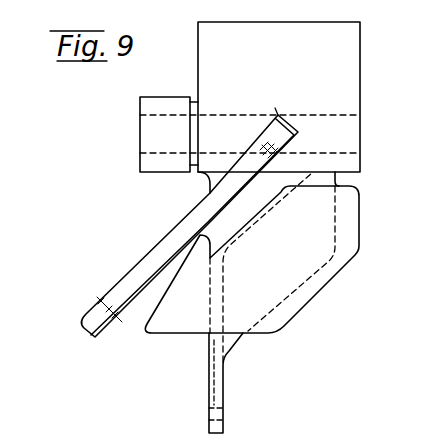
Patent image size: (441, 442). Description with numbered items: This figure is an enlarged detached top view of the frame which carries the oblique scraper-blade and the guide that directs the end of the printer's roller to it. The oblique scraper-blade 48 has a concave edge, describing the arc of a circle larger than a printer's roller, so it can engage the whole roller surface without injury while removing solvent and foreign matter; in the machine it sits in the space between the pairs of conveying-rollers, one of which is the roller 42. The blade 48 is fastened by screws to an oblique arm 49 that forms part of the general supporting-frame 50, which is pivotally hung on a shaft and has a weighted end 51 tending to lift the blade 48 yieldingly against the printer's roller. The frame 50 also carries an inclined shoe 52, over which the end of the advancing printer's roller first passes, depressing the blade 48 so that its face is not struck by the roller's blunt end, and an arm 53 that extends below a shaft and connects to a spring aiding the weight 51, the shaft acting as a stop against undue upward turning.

The conveying-roller 42 is at (150, 352).
The oblique scraper-blade 48 is at (162, 265).
The oblique arm 49 is at (170, 237).
The supporting-frame 50 is at (352, 165).
The weighted end 51 is at (279, 97).
The inclined shoe 52 is at (304, 305).
The arm 53 is at (216, 388).